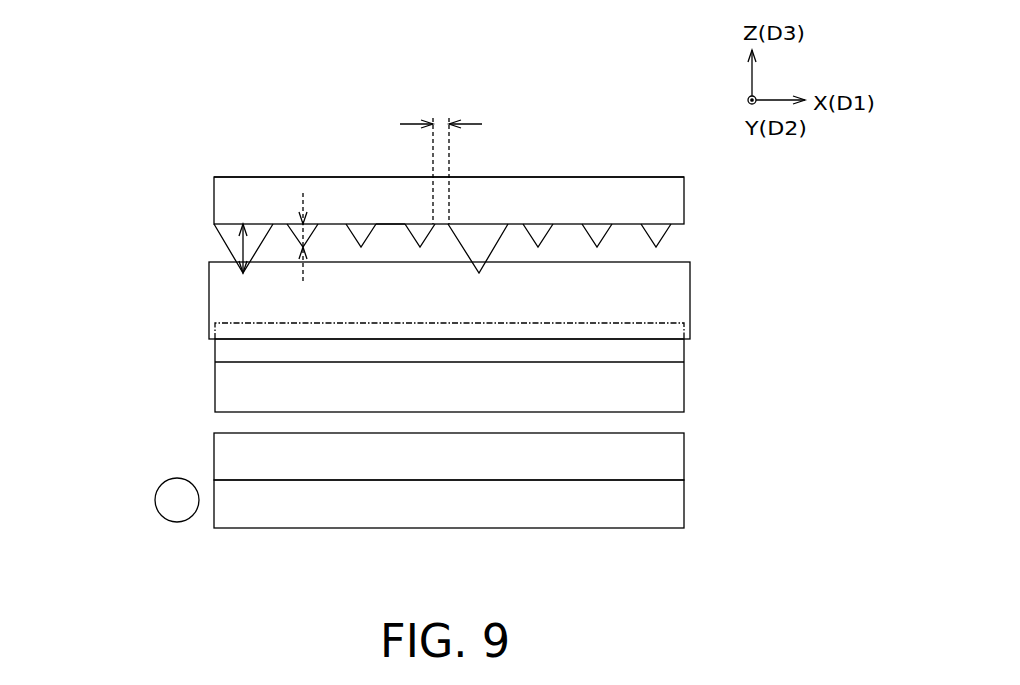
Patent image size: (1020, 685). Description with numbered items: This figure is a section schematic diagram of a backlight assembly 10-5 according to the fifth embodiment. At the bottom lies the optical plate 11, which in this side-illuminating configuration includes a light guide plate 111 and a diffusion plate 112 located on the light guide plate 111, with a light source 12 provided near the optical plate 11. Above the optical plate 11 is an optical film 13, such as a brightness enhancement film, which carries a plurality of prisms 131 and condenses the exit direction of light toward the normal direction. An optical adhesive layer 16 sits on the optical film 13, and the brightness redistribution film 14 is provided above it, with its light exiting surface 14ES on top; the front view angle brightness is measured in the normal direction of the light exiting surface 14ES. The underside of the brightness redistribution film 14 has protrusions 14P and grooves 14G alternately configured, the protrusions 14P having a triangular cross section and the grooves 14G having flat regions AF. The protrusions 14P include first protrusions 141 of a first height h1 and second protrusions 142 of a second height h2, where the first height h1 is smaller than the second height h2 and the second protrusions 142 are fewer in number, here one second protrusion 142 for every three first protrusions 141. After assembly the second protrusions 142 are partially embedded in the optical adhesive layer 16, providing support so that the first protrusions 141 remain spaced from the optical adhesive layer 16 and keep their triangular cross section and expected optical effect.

The backlight assembly 10-5 is at (103, 67).
The optical plate 11 is at (512, 489).
The light guide plate 111 is at (666, 503).
The diffusion plate 112 is at (669, 458).
The light source 12 is at (170, 497).
The optical film 13 is at (491, 367).
The prisms 131 is at (670, 352).
The brightness redistribution film 14 is at (481, 180).
The protrusions 14P is at (442, 180).
The first protrusions 141 is at (536, 235).
The second protrusions 142 is at (481, 237).
The grooves 14G is at (384, 236).
The light exiting surface 14ES is at (616, 177).
The optical adhesive layer 16 is at (672, 305).
The first height h1 is at (304, 240).
The second height h2 is at (242, 245).
The flat region AF is at (441, 156).